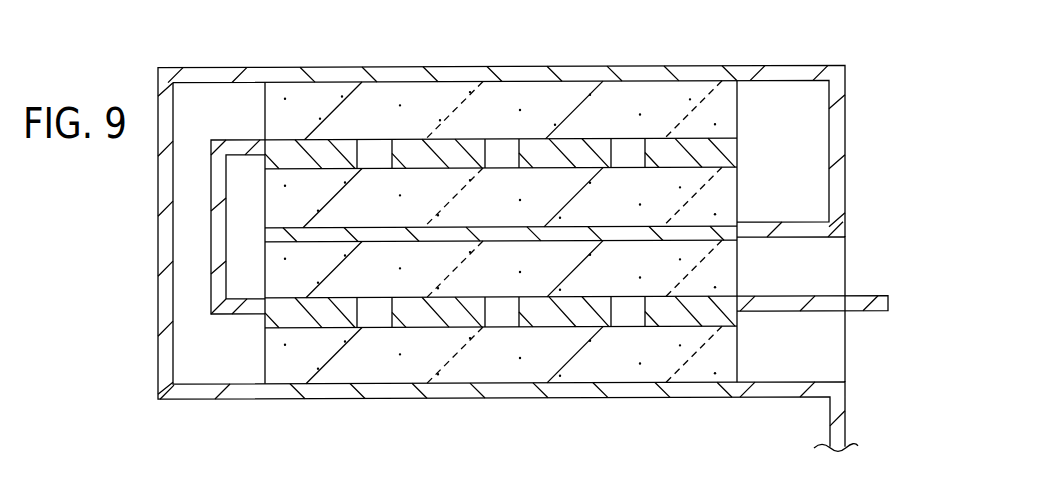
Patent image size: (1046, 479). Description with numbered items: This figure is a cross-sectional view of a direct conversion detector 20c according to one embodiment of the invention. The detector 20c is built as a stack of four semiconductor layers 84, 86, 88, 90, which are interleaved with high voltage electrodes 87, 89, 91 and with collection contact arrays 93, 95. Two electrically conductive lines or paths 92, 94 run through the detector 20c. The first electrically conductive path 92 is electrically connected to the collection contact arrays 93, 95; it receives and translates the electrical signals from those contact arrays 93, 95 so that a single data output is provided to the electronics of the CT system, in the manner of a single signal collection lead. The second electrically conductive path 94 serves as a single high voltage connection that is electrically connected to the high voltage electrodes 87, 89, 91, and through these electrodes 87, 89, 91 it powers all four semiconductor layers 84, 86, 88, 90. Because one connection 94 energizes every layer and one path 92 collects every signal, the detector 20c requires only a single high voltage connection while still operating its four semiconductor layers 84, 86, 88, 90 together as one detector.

The detector 20c is at (826, 36).
The electrically conductive path 94 is at (177, 70).
The electrically conductive path 92 is at (244, 139).
The high voltage electrode 87 is at (458, 72).
The semiconductor layer 84 is at (665, 95).
The collection contact array 93 is at (744, 150).
The semiconductor layer 86 is at (727, 205).
The high voltage electrode 89 is at (495, 228).
The semiconductor layer 88 is at (725, 278).
The collection contact array 95 is at (290, 312).
The semiconductor layer 90 is at (725, 363).
The high voltage electrode 91 is at (332, 392).